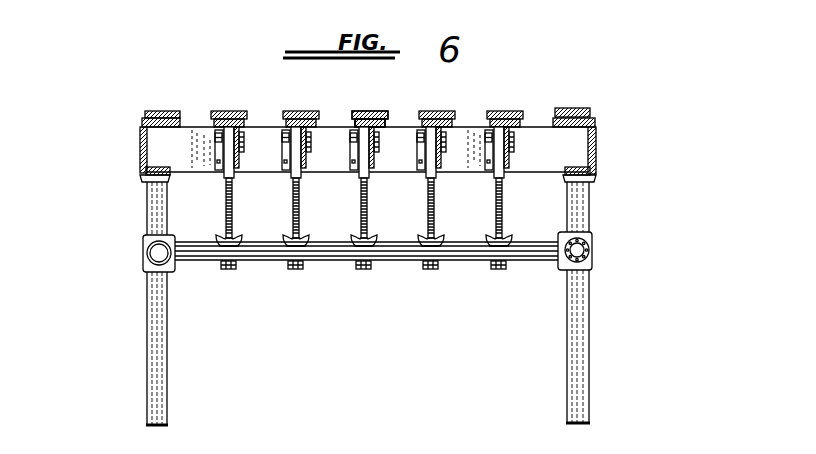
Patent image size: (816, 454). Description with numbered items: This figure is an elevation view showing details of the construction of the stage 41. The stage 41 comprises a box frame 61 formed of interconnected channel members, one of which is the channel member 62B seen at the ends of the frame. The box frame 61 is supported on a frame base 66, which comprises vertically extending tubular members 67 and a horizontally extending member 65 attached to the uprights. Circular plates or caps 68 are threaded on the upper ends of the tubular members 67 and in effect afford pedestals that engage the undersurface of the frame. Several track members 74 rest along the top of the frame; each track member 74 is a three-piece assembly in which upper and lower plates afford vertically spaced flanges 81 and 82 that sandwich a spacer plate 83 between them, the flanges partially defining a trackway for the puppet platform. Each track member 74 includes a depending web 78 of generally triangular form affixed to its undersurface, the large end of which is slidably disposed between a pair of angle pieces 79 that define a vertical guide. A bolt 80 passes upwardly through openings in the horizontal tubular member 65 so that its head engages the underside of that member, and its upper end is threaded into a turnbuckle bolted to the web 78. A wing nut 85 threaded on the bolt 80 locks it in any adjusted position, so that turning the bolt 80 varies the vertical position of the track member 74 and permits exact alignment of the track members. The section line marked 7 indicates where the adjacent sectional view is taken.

The stage 41 is at (103, 114).
The box frame 61 is at (600, 152).
The channel member 62B is at (142, 158).
The circular plates or caps 68 is at (597, 173).
The track member 74 is at (366, 110).
The flange 81 is at (387, 122).
The flange 82 is at (395, 128).
The spacer plate 83 is at (351, 122).
The depending web 78 is at (512, 148).
The angle pieces 79 is at (489, 176).
The bolt 80 is at (503, 212).
The wing nut 85 is at (506, 240).
The horizontally extending member 65 is at (477, 262).
The frame base 66 is at (601, 306).
The tubular members 67 is at (165, 356).
The section line 7- 7 is at (296, 94).